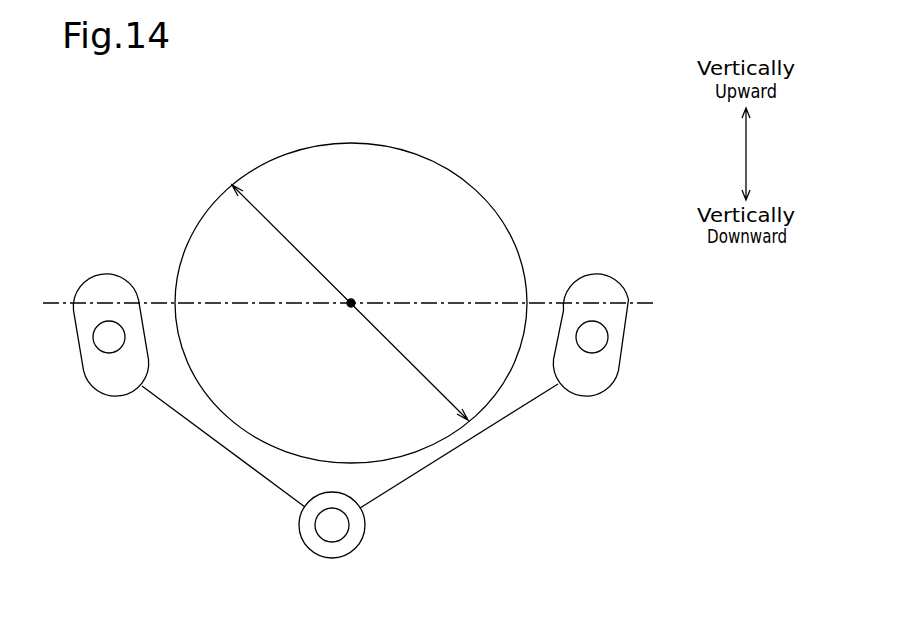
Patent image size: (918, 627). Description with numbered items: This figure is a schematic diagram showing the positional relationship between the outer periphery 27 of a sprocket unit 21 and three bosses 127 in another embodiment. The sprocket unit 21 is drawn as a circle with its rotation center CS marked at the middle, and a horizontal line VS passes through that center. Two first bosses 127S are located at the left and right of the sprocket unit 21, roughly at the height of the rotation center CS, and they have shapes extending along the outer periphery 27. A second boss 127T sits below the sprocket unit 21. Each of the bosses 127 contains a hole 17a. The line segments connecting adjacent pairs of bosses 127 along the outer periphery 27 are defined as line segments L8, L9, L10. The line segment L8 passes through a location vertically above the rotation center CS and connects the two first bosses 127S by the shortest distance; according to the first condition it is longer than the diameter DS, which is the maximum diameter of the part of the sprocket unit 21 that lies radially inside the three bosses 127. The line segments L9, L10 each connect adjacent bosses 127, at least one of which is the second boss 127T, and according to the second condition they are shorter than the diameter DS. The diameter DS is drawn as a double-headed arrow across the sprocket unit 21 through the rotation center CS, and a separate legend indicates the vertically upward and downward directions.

The outer periphery 27 is at (350, 143).
The sprocket unit 21 is at (351, 279).
The bosses 127 is at (362, 383).
The first bosses 127S is at (103, 272).
The second boss 127T is at (366, 525).
The hole 17a is at (97, 337).
The virtual horizontal line VS is at (60, 302).
The rotation center CS is at (352, 306).
The diameter DS is at (407, 362).
The line segment L8 is at (246, 300).
The line segment L9 is at (223, 447).
The line segment L10 is at (490, 430).